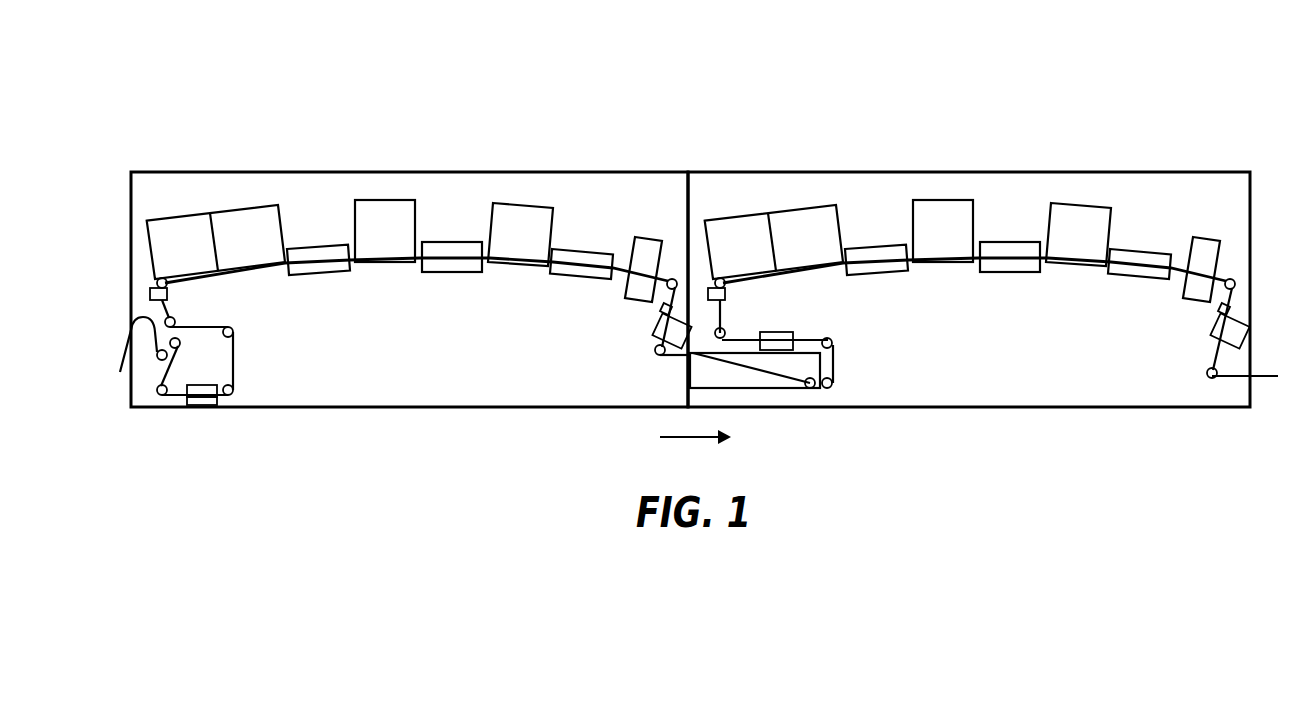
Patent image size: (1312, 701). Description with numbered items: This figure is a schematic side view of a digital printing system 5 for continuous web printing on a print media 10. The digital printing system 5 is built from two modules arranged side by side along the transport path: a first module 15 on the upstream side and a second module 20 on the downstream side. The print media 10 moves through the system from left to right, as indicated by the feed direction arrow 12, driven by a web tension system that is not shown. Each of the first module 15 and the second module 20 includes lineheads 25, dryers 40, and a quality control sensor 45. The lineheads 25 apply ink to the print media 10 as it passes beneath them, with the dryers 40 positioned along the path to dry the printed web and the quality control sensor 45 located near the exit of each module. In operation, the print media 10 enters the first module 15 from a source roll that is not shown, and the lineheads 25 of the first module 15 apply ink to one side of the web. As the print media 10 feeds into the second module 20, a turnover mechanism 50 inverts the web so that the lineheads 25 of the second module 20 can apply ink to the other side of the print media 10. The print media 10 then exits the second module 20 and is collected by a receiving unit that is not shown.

The digital printing system 5 is at (741, 62).
The print media 10 is at (122, 370).
The feed direction arrow 12 is at (686, 440).
The first module 15 is at (612, 172).
The second module 20 is at (1172, 172).
The lineheads 25 is at (171, 218).
The dryers 40 is at (332, 277).
The quality control sensor 45 is at (653, 237).
The turnover mechanism 50 is at (835, 363).